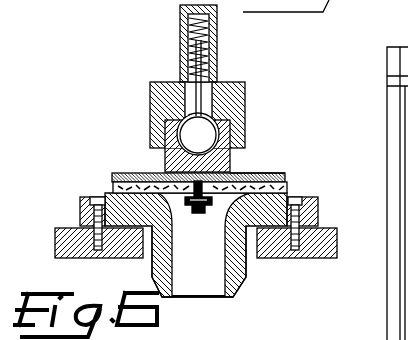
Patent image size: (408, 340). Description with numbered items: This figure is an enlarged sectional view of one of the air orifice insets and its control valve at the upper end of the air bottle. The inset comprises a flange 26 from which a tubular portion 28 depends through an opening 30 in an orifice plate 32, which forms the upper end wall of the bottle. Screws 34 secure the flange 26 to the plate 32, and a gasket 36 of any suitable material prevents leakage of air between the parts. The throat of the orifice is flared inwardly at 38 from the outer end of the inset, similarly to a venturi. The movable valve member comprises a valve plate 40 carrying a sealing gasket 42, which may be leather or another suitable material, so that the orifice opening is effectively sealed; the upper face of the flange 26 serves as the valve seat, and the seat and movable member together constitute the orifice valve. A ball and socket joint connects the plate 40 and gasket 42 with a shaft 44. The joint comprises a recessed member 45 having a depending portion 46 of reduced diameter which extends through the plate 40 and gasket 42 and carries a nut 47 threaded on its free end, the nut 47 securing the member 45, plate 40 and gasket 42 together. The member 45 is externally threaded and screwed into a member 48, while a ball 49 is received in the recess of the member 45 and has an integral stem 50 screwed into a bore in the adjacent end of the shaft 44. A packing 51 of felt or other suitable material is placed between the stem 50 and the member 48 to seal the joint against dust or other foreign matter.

The flange 26 is at (320, 216).
The tubular portion 28 is at (247, 270).
The opening 30 is at (255, 260).
The orifice plate 32 is at (335, 243).
The screws 34 is at (94, 197).
The gasket 36 is at (75, 226).
The flared throat 38 is at (222, 206).
The valve plate 40 is at (116, 173).
The sealing gasket 42 is at (110, 186).
The shaft 44 is at (180, 12).
The recessed member 45 is at (240, 160).
The depending portion 46 is at (236, 172).
The nut 47 is at (183, 214).
The member 48 is at (162, 88).
The ball 49 is at (186, 128).
The stem 50 is at (208, 52).
The packing 51 is at (205, 74).